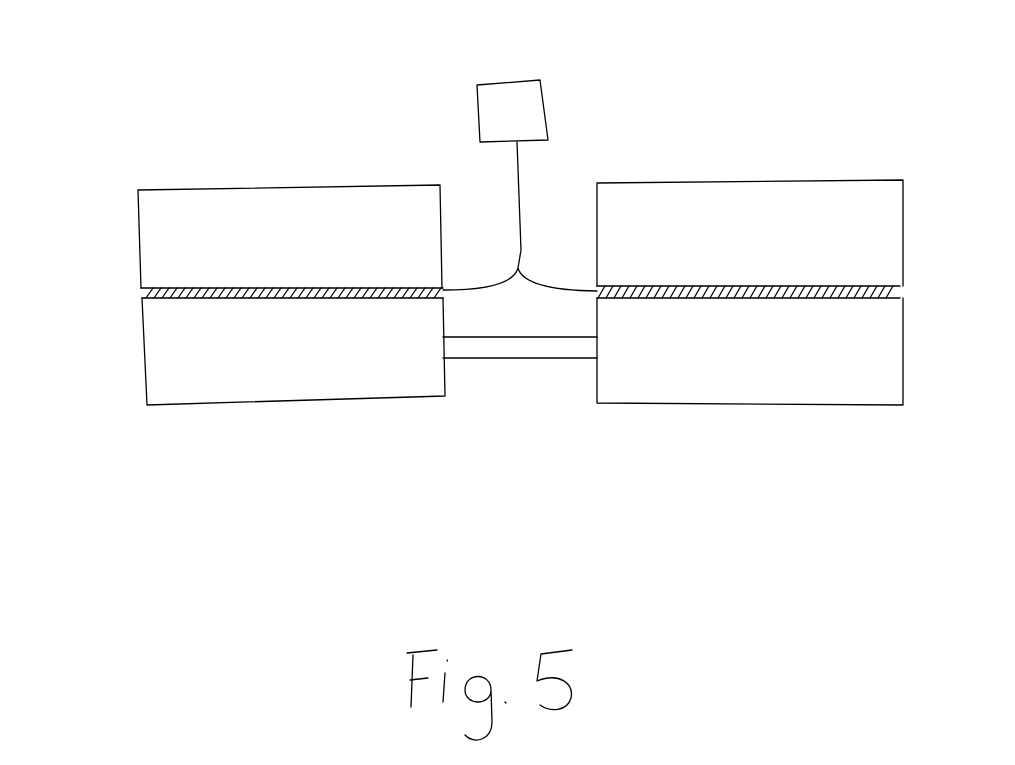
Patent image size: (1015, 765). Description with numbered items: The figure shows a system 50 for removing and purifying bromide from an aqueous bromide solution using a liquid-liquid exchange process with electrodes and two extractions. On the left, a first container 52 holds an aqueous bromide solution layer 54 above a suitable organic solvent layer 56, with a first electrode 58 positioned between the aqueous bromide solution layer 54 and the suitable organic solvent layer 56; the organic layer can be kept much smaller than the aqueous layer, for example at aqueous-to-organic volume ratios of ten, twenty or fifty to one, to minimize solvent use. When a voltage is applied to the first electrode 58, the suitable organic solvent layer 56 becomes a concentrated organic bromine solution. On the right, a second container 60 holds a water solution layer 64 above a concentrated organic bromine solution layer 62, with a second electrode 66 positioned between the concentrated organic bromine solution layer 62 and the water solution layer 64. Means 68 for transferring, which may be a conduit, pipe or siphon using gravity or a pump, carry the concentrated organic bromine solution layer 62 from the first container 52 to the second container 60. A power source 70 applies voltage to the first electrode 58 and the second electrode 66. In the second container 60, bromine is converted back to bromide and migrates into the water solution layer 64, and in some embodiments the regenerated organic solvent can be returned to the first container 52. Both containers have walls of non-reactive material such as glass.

The system 50 is at (834, 128).
The first container 52 is at (243, 405).
The aqueous bromide solution layer 54 is at (300, 218).
The suitable organic solvent layer 56 is at (327, 362).
The first electrode 58 is at (180, 293).
The second container 60 is at (703, 403).
The concentrated organic bromine solution layer 62 is at (873, 362).
The water solution layer 64 is at (868, 240).
The second electrode 66 is at (793, 298).
The means for transferring 68 is at (507, 347).
The power source 70 is at (511, 98).